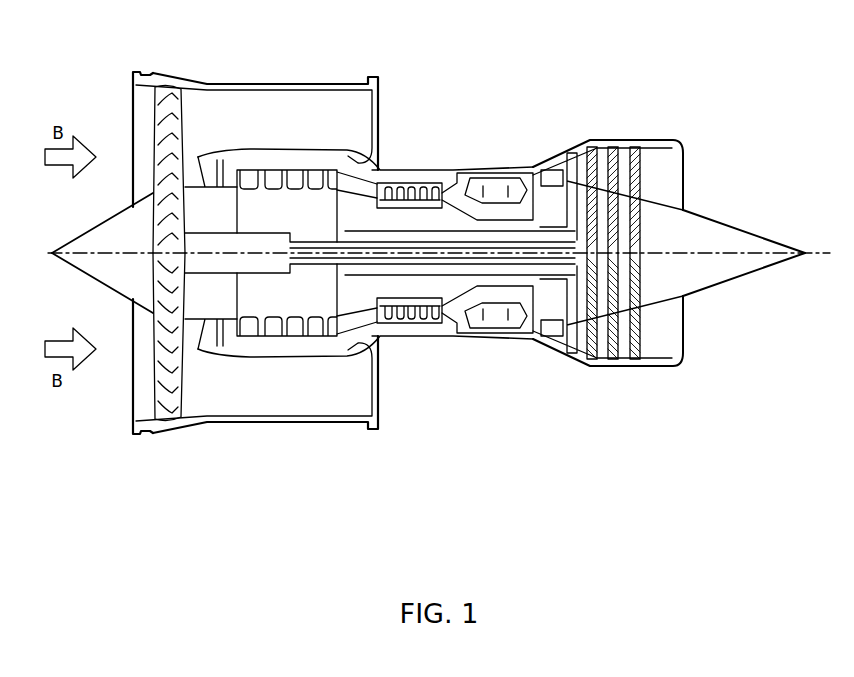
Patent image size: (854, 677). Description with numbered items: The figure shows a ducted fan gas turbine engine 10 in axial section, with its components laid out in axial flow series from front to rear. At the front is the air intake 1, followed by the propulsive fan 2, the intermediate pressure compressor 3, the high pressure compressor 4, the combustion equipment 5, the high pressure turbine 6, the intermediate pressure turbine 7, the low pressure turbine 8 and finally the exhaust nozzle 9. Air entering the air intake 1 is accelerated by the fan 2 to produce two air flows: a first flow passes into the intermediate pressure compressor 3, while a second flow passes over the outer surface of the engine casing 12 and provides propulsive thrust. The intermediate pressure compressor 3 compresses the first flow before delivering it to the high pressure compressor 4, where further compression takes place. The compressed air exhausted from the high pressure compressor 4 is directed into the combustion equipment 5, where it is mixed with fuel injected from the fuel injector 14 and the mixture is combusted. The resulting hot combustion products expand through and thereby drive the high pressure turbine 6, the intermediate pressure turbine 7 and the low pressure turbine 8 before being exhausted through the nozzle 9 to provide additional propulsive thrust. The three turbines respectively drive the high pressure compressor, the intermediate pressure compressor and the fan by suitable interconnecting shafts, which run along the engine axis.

The air intake 1 is at (143, 437).
The propulsive fan 2 is at (180, 86).
The intermediate pressure compressor 3 is at (267, 320).
The high pressure compressor 4 is at (418, 316).
The combustion equipment 5 is at (497, 182).
The high pressure turbine 6 is at (533, 170).
The intermediate pressure turbine 7 is at (572, 150).
The low pressure turbine 8 is at (583, 371).
The exhaust nozzle 9 is at (696, 254).
The ducted fan gas turbine engine 10 is at (312, 509).
The engine casing 12 is at (357, 160).
The fuel injector 14 is at (453, 170).